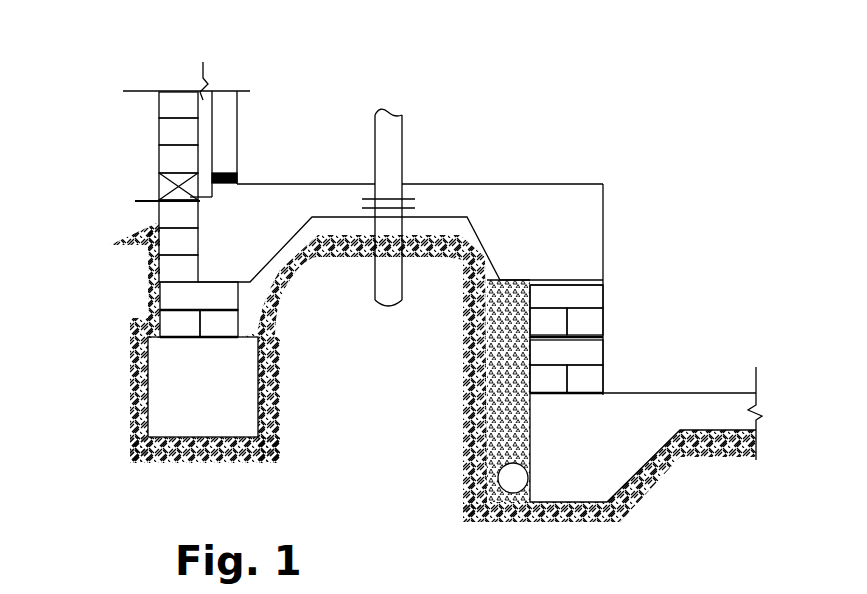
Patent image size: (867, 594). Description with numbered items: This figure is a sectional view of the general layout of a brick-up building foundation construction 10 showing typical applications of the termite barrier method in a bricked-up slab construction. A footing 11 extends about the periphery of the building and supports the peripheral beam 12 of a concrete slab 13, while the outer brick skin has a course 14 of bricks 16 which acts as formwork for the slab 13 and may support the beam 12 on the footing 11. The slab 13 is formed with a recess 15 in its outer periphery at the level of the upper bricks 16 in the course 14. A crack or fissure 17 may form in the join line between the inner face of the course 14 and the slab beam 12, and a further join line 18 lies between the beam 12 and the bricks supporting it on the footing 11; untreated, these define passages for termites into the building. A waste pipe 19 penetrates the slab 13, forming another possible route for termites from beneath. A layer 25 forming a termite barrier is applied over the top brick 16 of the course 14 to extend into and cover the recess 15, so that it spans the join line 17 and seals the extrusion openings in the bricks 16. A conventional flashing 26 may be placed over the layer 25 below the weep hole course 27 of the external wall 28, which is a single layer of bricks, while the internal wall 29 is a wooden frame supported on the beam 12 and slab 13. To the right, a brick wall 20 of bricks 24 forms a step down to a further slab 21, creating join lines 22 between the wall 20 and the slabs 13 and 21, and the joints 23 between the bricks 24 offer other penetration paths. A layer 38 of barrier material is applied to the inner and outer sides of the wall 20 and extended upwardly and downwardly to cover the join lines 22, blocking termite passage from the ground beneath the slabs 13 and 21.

The brick-up building foundation construction 10 is at (507, 132).
The footing 11 is at (238, 428).
The peripheral beam 12 is at (247, 262).
The concrete slab 13 is at (288, 133).
The course 14 is at (123, 275).
The recess 15 is at (190, 200).
The bricks 16 is at (153, 240).
The crack or fissure 17 is at (180, 257).
The join line 18 is at (148, 335).
The waste pipe 19 is at (392, 135).
The brick wall 20 is at (632, 297).
The further slab 21 is at (722, 410).
The join lines 22 is at (585, 285).
The joints 23 is at (590, 350).
The bricks 24 is at (540, 348).
The layer 25 is at (153, 205).
The flashing 26 is at (180, 187).
The weep hole course 27 is at (157, 188).
The external wall 28 is at (157, 103).
The internal wall 29 is at (200, 70).
The layer 38 is at (603, 275).